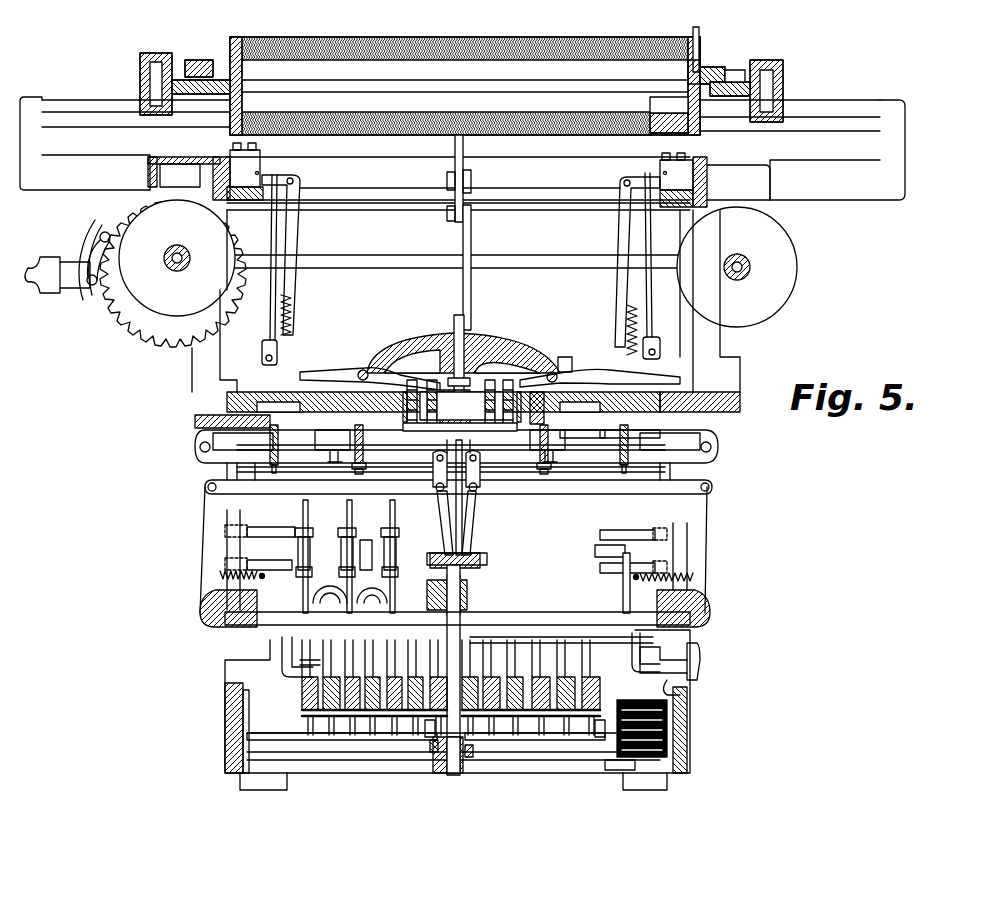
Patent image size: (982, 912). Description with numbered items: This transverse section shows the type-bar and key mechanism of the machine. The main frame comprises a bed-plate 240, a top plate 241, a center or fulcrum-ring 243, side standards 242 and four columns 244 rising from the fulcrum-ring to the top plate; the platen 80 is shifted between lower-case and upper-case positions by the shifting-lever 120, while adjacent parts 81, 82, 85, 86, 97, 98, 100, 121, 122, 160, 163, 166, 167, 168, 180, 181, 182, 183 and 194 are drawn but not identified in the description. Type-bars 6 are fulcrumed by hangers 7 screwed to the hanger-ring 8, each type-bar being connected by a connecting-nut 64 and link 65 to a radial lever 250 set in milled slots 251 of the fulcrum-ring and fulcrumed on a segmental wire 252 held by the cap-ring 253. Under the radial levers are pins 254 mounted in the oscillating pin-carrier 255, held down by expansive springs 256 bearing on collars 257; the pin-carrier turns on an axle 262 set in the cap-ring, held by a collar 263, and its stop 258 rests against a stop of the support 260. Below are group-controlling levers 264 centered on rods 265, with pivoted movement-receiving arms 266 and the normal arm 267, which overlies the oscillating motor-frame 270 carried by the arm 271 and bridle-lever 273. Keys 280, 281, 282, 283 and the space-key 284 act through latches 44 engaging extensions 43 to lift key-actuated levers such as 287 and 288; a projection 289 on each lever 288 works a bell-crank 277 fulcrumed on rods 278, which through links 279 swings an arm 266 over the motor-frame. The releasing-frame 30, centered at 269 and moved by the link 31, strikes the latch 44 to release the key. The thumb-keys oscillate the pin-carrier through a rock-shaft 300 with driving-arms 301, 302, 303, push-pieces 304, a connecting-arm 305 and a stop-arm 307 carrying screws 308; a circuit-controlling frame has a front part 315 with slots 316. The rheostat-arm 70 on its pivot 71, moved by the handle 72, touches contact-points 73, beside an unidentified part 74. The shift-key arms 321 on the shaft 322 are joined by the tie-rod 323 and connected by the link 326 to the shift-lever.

The type-bar 6 is at (300, 240).
The hanger 7 is at (235, 165).
The hanger-ring 8 is at (315, 197).
The releasing-frame 30 is at (560, 580).
The link 31 is at (630, 575).
The steel extension 43 is at (518, 728).
The latch 44 is at (330, 733).
The connecting-nut 64 is at (262, 360).
The link 65 is at (272, 330).
The rheostat-arm 70 is at (665, 675).
The pivot 71 is at (690, 695).
The handle 72 is at (698, 652).
The contact-points 73 is at (631, 728).
The side wall 74 is at (688, 745).
The platen 80 is at (512, 58).
The platen core 81 is at (592, 72).
The platen knob 82 is at (200, 60).
The carriage rail 85 is at (105, 108).
The end bracket 86 is at (32, 97).
The bearing 97 is at (669, 114).
The pin 98 is at (712, 72).
The pin 100 is at (690, 33).
The shifting-lever 120 is at (464, 155).
The collar 121 is at (447, 181).
The collar 122 is at (472, 182).
The frame arc 160 is at (110, 215).
The frame block 163 is at (165, 182).
The gear 166 is at (140, 320).
The link 167 is at (96, 305).
The handle 168 is at (70, 300).
The wheel 180 is at (192, 262).
The hub 181 is at (198, 235).
The hub 182 is at (734, 280).
The frame block 183 is at (745, 192).
The cross rod 194 is at (425, 252).
The bed-plate 240 is at (225, 710).
The top plate 241 is at (142, 150).
The side standards 242 is at (237, 473).
The fulcrum-ring 243 is at (195, 415).
The columns 244 is at (192, 372).
The radial levers 250 is at (375, 370).
The milled slots 251 is at (459, 342).
The segmental wire 252 is at (571, 356).
The cap-ring 253 is at (500, 345).
The pins 254 is at (520, 440).
The pin-carrier 255 is at (468, 400).
The expansive springs 256 is at (450, 410).
The collars 257 is at (430, 470).
The stop 258 is at (548, 430).
The support 260 is at (580, 432).
The axle 262 is at (454, 325).
The collar 263 is at (482, 463).
The group-controlling levers 264 is at (360, 460).
The rods 265 is at (198, 453).
The movement-receiving arms 266 is at (445, 508).
The normal movement-receiving arm 267 is at (478, 520).
The center 269 is at (222, 578).
The motor-frame 270 is at (490, 560).
The arm 271 is at (432, 596).
The bridle-lever 273 is at (450, 770).
The bell-cranks 277 is at (205, 555).
The rods 278 is at (200, 628).
The links 279 is at (300, 475).
The thumb-key 280 is at (405, 720).
The thumb-key 281 is at (330, 720).
The thumb-key 282 is at (287, 696).
The finger-key 283 is at (375, 720).
The space-key 284 is at (530, 745).
The key-actuated lever 287 is at (285, 658).
The key-actuated levers 288 is at (580, 628).
The projection 289 is at (545, 625).
The rock-shaft 300 is at (596, 545).
The driving-arm 301 is at (389, 526).
The driving-arm 302 is at (345, 526).
The driving-arm 303 is at (302, 526).
The push-pieces 304 is at (420, 512).
The connecting-arm 305 is at (340, 440).
The stop-arm 307 is at (358, 555).
The screws 308 is at (355, 460).
The front part 315 is at (325, 575).
The slots 316 is at (418, 573).
The arms 321 is at (600, 775).
The shaft 322 is at (243, 765).
The tie-rod 323 is at (506, 747).
The link 326 is at (471, 240).